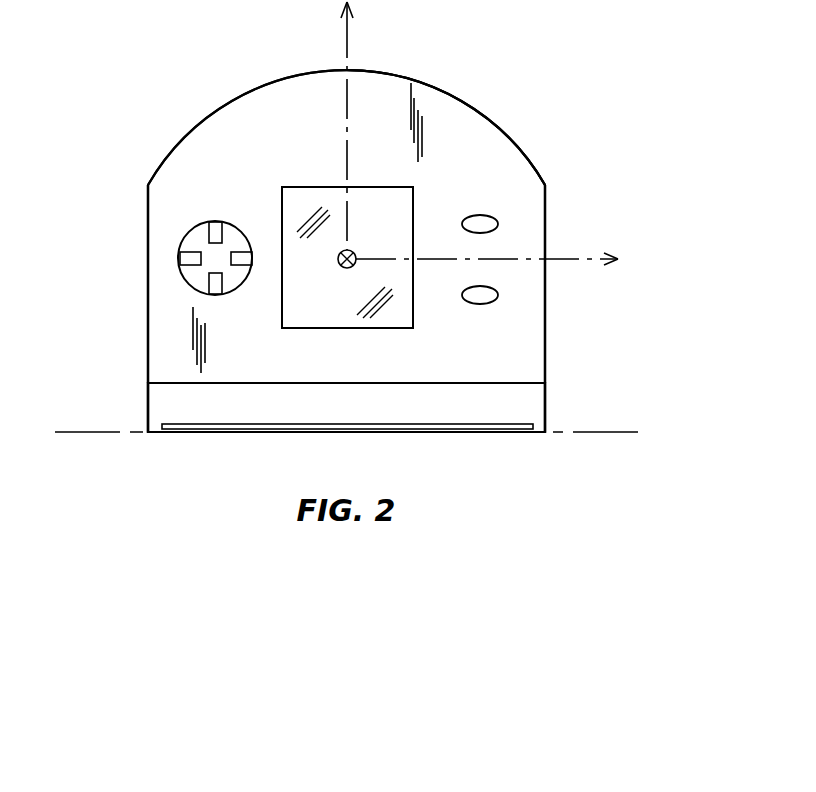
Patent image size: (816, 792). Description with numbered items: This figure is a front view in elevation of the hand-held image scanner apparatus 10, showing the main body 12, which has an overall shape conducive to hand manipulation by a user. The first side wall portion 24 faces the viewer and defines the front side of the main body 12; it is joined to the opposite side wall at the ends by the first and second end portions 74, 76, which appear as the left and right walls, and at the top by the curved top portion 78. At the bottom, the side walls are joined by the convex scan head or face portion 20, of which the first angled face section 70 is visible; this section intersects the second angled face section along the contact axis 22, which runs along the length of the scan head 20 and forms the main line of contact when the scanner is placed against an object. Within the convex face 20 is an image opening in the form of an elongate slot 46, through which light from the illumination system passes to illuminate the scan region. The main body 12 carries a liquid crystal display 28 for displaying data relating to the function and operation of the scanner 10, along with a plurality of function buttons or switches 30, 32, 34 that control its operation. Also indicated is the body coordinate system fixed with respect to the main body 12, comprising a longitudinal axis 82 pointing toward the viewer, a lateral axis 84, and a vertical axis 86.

The hand-held image scanner apparatus 10 is at (158, 79).
The main body 12 is at (398, 58).
The convex scan head or face portion 20 is at (545, 412).
The contact axis 22 is at (615, 432).
The first side wall portion 24 is at (358, 369).
The liquid crystal display 28 is at (300, 186).
The function button or switch 30 is at (228, 222).
The function button or switch 32 is at (478, 214).
The function button or switch 34 is at (480, 304).
The elongate slot 46 is at (178, 424).
The first angled face section 70 is at (358, 416).
The first end portion 74 is at (148, 247).
The second end portion 76 is at (545, 217).
The top portion 78 is at (509, 137).
The longitudinal axis 82 is at (337, 259).
The lateral axis 84 is at (579, 262).
The vertical axis 86 is at (347, 38).